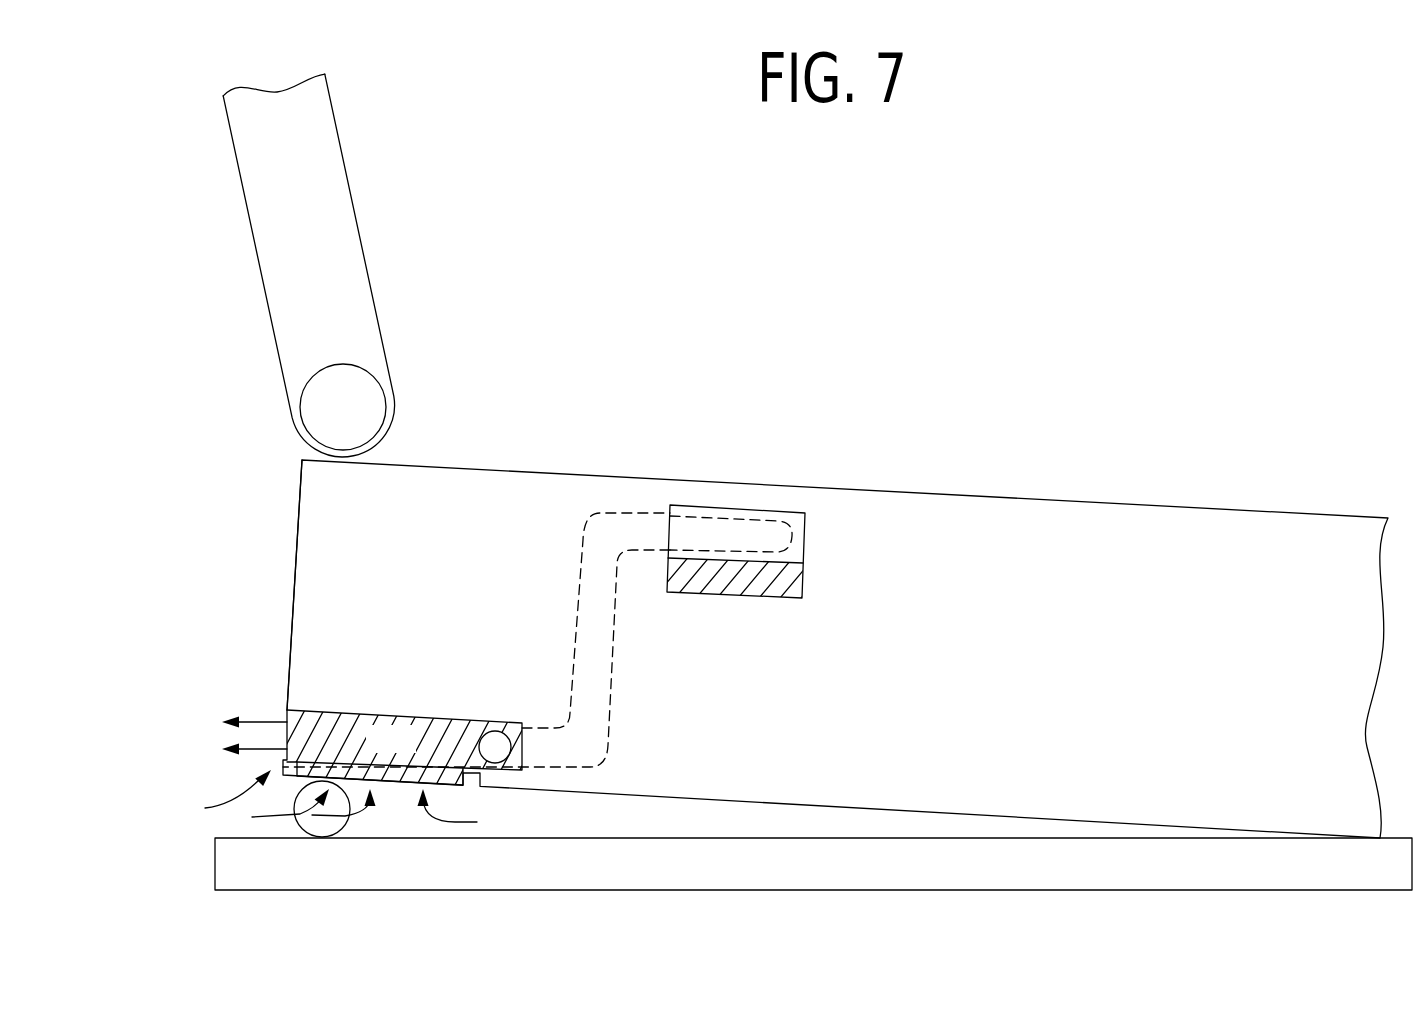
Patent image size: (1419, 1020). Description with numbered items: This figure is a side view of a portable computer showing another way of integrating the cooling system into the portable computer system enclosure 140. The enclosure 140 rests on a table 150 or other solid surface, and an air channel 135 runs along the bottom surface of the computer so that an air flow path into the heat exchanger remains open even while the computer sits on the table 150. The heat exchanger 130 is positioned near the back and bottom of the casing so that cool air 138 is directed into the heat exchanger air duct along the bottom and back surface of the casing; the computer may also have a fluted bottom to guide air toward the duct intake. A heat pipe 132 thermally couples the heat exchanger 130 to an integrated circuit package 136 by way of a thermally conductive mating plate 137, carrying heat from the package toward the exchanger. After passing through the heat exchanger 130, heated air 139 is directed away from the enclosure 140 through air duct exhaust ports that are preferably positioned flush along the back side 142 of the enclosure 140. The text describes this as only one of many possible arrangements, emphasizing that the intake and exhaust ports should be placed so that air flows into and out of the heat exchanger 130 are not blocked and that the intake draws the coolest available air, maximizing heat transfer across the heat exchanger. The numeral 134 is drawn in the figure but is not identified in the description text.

The heat exchanger 130 is at (415, 755).
The heat pipe 132 is at (580, 543).
The heat pipe end 134 is at (495, 733).
The air channel 135 is at (480, 776).
The integrated circuit package 136 is at (737, 587).
The thermally conductive mating plate 137 is at (807, 528).
The cool air 138 is at (341, 801).
The heated air 139 is at (227, 736).
The portable computer system enclosure 140 is at (1220, 706).
The back side 142 is at (295, 548).
The table 150 is at (927, 880).